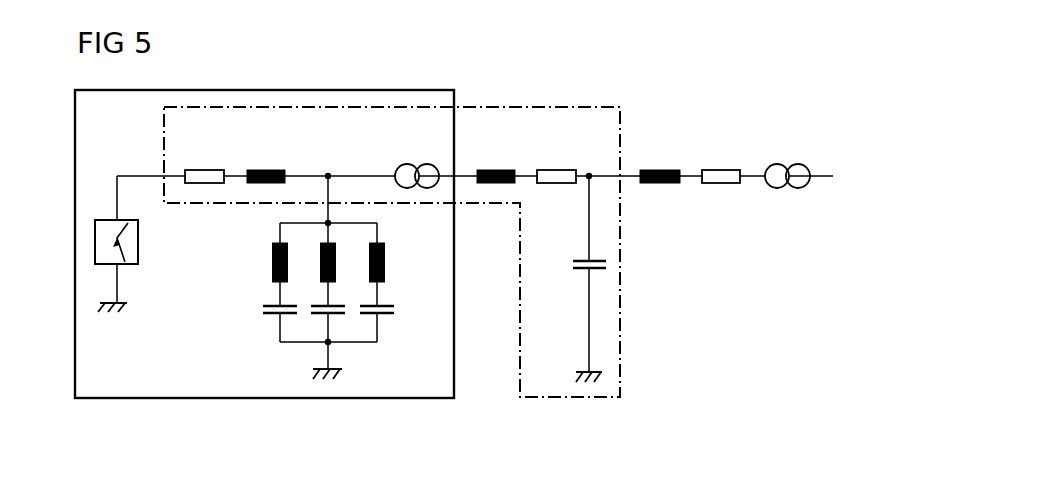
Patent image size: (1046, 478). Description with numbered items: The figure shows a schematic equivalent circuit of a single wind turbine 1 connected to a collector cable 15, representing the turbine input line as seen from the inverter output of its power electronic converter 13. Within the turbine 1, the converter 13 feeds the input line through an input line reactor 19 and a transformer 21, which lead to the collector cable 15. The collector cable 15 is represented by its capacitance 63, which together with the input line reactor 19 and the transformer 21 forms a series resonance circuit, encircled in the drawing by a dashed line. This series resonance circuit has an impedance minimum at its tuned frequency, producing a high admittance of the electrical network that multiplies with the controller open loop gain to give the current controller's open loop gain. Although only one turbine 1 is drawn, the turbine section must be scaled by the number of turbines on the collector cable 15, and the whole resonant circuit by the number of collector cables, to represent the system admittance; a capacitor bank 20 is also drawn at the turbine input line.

The wind turbine 1 is at (362, 90).
The power electronic converter 13 is at (138, 240).
The collector cable 15 is at (655, 136).
The input line reactor 19 is at (262, 169).
The capacitor bank (filter) 20 is at (385, 293).
The transformer 21 is at (411, 163).
The capacitance 63 is at (573, 262).